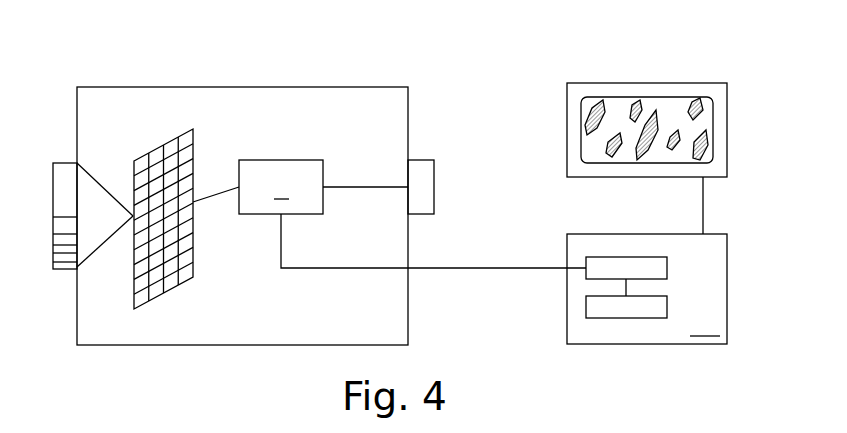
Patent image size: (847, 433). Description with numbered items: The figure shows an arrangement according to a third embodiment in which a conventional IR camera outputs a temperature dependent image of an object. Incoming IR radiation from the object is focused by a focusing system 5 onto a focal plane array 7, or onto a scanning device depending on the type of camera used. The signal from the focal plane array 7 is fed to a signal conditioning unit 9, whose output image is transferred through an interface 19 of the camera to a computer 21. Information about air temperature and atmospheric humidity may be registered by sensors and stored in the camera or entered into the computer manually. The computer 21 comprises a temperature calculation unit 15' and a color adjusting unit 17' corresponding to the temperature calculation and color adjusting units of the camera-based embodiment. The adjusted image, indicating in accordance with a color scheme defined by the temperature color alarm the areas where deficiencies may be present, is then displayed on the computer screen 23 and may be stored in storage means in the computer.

The focusing system 5 is at (63, 170).
The focal plane array 7 is at (168, 135).
The signal conditioning unit 9 is at (281, 187).
The interface 19 is at (422, 169).
The computer 21 is at (647, 289).
The computer screen 23 is at (702, 123).
The temperature calculation unit 15' is at (604, 239).
The color adjusting unit 17' is at (614, 349).